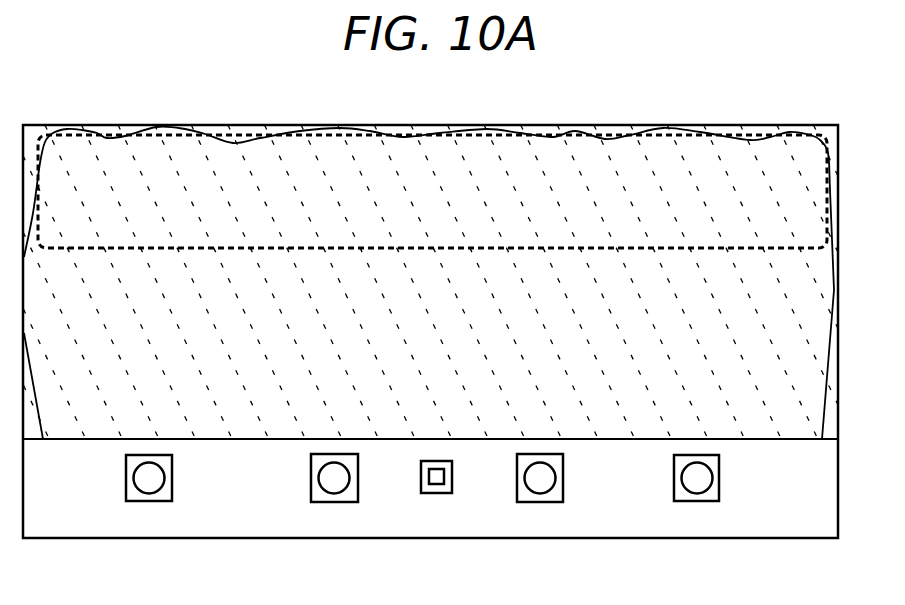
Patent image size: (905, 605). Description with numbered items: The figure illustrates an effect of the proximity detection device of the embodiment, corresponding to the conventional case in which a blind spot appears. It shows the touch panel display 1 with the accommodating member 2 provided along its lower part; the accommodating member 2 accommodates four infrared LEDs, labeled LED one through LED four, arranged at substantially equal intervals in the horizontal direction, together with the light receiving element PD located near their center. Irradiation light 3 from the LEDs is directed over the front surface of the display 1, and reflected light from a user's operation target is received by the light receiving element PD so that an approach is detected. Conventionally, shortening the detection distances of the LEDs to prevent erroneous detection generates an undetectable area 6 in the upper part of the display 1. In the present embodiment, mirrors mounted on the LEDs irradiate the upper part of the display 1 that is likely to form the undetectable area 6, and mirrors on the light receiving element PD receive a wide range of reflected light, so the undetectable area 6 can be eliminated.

The touch panel display 1 is at (425, 127).
The accommodating member 2 is at (690, 540).
The irradiation light 3 is at (573, 172).
The undetectable area 6 is at (193, 135).